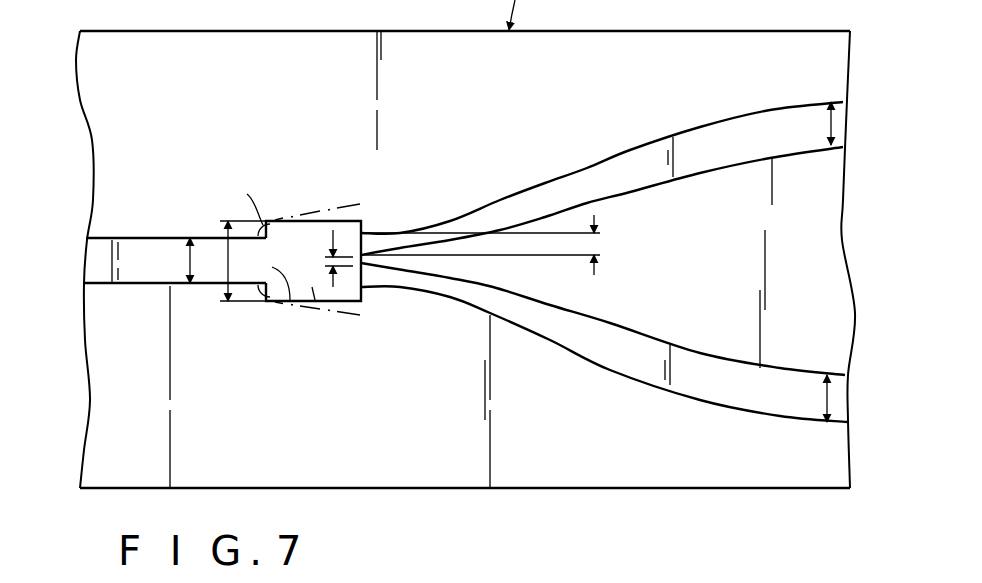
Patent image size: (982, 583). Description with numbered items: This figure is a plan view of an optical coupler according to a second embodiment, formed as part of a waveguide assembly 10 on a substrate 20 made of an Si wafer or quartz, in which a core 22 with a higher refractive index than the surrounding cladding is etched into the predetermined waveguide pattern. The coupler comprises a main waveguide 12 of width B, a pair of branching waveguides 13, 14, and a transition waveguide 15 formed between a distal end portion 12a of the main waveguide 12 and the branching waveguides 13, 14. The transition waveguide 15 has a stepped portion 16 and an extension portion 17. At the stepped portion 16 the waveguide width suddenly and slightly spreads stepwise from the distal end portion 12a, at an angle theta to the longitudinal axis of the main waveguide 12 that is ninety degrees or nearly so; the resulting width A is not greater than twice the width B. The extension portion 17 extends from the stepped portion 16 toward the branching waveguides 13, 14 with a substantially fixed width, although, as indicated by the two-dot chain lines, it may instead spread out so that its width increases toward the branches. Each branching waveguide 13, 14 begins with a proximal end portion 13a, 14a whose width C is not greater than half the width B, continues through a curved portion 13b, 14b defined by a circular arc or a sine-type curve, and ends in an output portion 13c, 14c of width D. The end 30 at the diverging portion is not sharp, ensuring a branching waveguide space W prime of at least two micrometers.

The waveguide assembly 10 is at (462, 188).
The main waveguide 12 is at (130, 286).
The distal end portion 12a is at (287, 302).
The branching waveguide 13 is at (698, 125).
The proximal end portion 13a is at (372, 234).
The curved portion 13b is at (588, 178).
The output portion of first branch waveguide 13c is at (790, 111).
The branching waveguide 14 is at (700, 405).
The proximal end portion 14a is at (381, 288).
The curved portion 14b is at (585, 350).
The output portion of second branch waveguide 14c is at (790, 410).
The transition waveguide 15 is at (295, 210).
The stepped portion 16 is at (266, 221).
The extension portion 17 is at (322, 220).
The substrate 20 is at (104, 139).
The core 22 is at (313, 302).
The end 30 is at (366, 263).